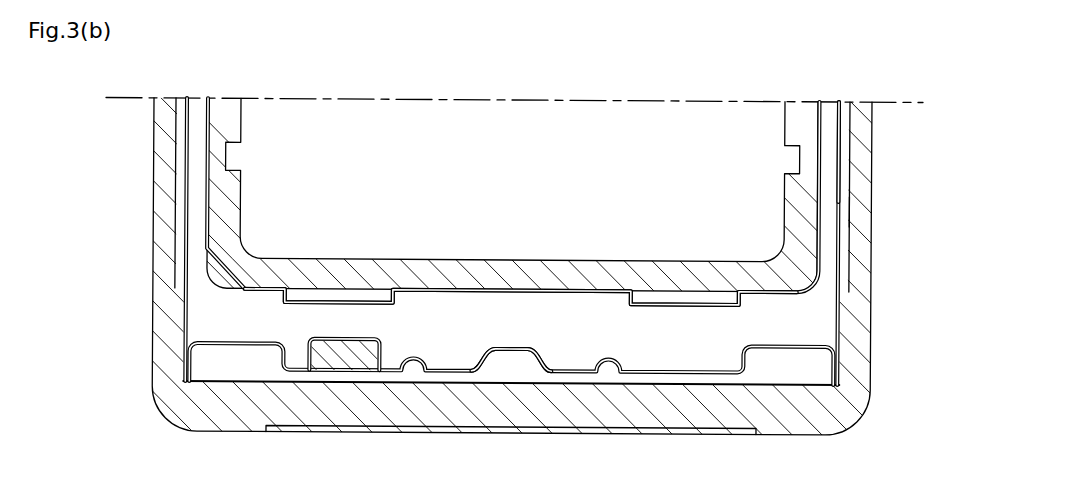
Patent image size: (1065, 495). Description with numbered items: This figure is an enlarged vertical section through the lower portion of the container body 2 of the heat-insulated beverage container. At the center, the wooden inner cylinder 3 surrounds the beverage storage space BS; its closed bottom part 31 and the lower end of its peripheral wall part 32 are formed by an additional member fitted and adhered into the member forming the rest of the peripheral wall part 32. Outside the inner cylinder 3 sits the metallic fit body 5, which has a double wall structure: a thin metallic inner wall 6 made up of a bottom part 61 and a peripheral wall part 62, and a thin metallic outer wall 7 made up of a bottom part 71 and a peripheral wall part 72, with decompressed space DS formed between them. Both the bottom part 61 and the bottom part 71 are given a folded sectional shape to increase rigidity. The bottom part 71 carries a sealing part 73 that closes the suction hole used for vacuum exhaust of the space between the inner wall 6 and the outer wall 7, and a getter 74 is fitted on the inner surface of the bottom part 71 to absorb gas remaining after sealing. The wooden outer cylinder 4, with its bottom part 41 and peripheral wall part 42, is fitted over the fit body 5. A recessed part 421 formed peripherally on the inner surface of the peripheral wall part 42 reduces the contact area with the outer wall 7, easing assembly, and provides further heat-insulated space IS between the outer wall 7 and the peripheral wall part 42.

The container body 2 is at (532, 290).
The inner cylinder 3 is at (454, 175).
The bottom part 31 is at (346, 258).
The peripheral wall part 32 is at (233, 122).
The outer cylinder 4 is at (532, 290).
The bottom part 41 is at (693, 416).
The peripheral wall part 42 is at (163, 220).
The recessed part 421 is at (852, 133).
The fit body 5 is at (847, 312).
The inner wall 6 is at (470, 220).
The bottom part 61 is at (436, 305).
The peripheral wall part 62 is at (815, 118).
The outer wall 7 is at (543, 266).
The bottom part 71 is at (576, 374).
The peripheral wall part 72 is at (846, 111).
The sealing part 73 is at (510, 351).
The getter 74 is at (345, 360).
The beverage storage space BS is at (495, 166).
The decompressed space DS is at (494, 334).
The heat-insulated space IS is at (850, 207).